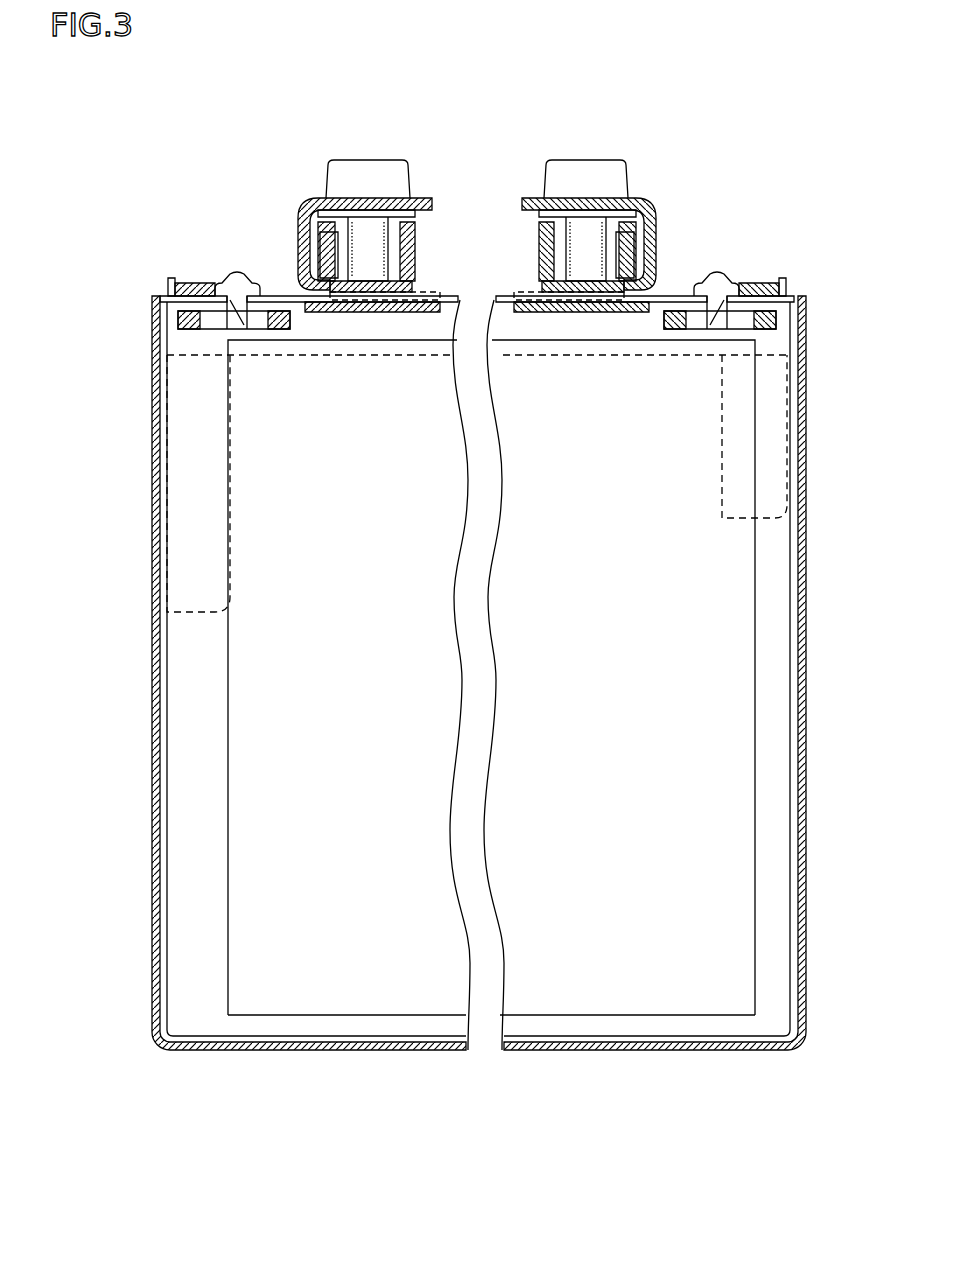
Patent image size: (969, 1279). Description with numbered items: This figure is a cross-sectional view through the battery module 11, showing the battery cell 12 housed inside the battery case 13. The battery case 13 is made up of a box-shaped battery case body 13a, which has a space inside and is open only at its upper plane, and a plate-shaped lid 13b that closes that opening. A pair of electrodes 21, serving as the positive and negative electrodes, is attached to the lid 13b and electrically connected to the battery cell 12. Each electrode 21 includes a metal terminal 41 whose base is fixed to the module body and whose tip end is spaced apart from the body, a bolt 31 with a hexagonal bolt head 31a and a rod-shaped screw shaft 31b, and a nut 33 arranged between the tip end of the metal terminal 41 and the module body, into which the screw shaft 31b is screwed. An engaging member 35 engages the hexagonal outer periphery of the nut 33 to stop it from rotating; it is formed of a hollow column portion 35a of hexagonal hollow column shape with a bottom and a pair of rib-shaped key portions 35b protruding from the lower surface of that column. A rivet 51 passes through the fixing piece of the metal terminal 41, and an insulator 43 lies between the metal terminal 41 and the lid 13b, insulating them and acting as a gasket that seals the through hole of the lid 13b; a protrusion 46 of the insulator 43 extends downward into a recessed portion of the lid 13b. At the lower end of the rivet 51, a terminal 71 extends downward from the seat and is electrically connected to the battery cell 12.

The battery module 11 is at (581, 1058).
The battery cell 12 is at (329, 970).
The battery case 13 is at (420, 308).
The battery case body 13a is at (432, 328).
The lid 13b is at (152, 295).
The electrode 21 is at (479, 187).
The bolt 31 is at (479, 183).
The bolt head 31a is at (336, 178).
The screw shaft 31b is at (370, 235).
The nut 33 is at (330, 236).
The engaging member 35 is at (477, 187).
The hollow column portion 35a is at (408, 250).
The key portion 35b is at (440, 296).
The metal terminal 41 is at (299, 232).
The insulator 43 is at (165, 282).
The protrusion 46 is at (372, 307).
The rivet 51 is at (238, 290).
The terminal 71 is at (200, 478).